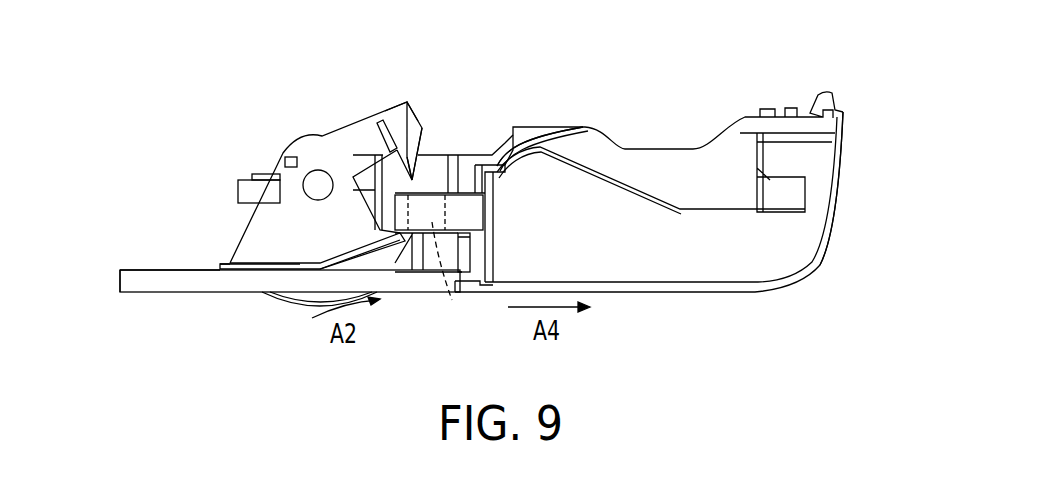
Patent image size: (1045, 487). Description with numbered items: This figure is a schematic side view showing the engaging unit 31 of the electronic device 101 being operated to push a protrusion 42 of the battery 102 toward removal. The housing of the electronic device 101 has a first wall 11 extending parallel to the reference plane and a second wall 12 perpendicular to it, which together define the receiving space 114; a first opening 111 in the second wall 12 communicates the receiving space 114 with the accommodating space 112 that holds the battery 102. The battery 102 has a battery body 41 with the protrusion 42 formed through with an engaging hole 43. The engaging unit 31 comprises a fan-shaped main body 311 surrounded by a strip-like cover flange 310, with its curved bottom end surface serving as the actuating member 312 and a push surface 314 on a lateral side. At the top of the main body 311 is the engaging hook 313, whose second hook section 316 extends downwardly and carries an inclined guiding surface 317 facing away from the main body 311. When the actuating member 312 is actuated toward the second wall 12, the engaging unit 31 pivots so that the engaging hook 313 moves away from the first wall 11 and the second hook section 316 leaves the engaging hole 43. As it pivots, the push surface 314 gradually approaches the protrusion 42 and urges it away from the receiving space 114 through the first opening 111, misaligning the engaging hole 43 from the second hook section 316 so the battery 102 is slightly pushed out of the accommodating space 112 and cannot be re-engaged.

The first wall 11 is at (188, 282).
The electronic device 101 is at (118, 279).
The receiving space 114 is at (156, 262).
The engaging unit 31 is at (305, 137).
The engaging hook 313 is at (350, 143).
The second hook section 316 is at (406, 101).
The inclined guiding surface 317 is at (424, 127).
The main body 311 is at (275, 207).
The cover flange 310 is at (238, 265).
The actuating member 312 is at (300, 305).
The push surface 314 is at (377, 208).
The second wall 12 is at (467, 177).
The protrusion 42 is at (472, 212).
The first opening 111 is at (470, 236).
The engaging hole 43 is at (459, 278).
The battery body 41 is at (653, 260).
The accommodating space 112 is at (527, 138).
The battery 102 is at (812, 265).